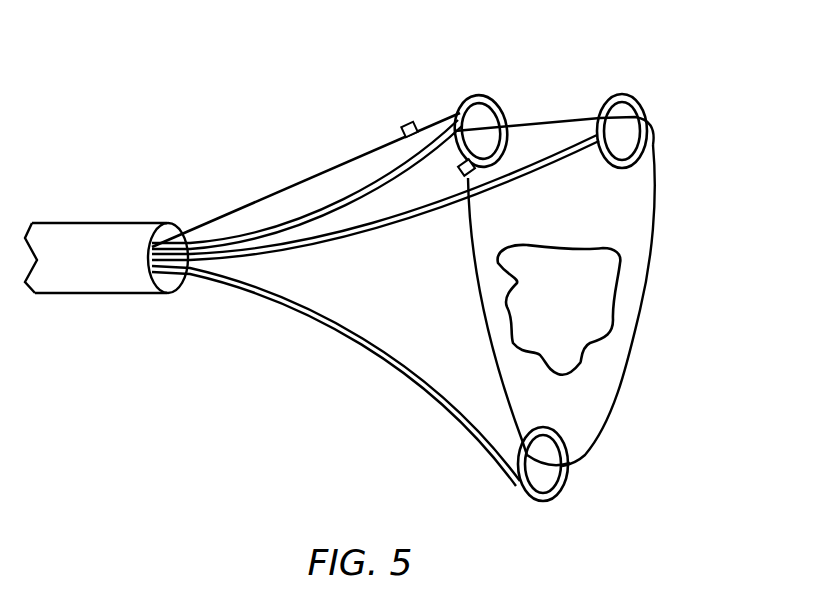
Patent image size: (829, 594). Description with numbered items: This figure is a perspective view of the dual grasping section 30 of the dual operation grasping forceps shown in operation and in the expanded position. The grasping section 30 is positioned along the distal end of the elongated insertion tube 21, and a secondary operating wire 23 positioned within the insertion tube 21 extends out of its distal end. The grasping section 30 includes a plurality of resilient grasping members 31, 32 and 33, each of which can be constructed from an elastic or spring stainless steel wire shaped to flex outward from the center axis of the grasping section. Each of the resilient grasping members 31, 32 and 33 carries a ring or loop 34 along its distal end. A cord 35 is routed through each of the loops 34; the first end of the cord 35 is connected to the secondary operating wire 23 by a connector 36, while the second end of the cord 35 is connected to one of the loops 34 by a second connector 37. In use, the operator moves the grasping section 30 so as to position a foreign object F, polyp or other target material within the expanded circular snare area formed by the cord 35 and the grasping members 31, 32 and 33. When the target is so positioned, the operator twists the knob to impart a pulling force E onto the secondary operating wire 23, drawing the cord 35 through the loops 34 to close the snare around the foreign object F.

The dual grasping section 30 is at (126, 93).
The elongated insertion tube 21 is at (107, 283).
The secondary operating wire 23 is at (317, 175).
The resilient grasping member 31 is at (382, 170).
The resilient grasping member 32 is at (373, 232).
The resilient grasping member 33 is at (380, 348).
The ring/loop 34 is at (480, 96).
The cord 35 is at (646, 283).
The connector 36 is at (406, 122).
The second connector 37 is at (460, 175).
The pulling force E is at (265, 163).
The foreign object F is at (583, 318).